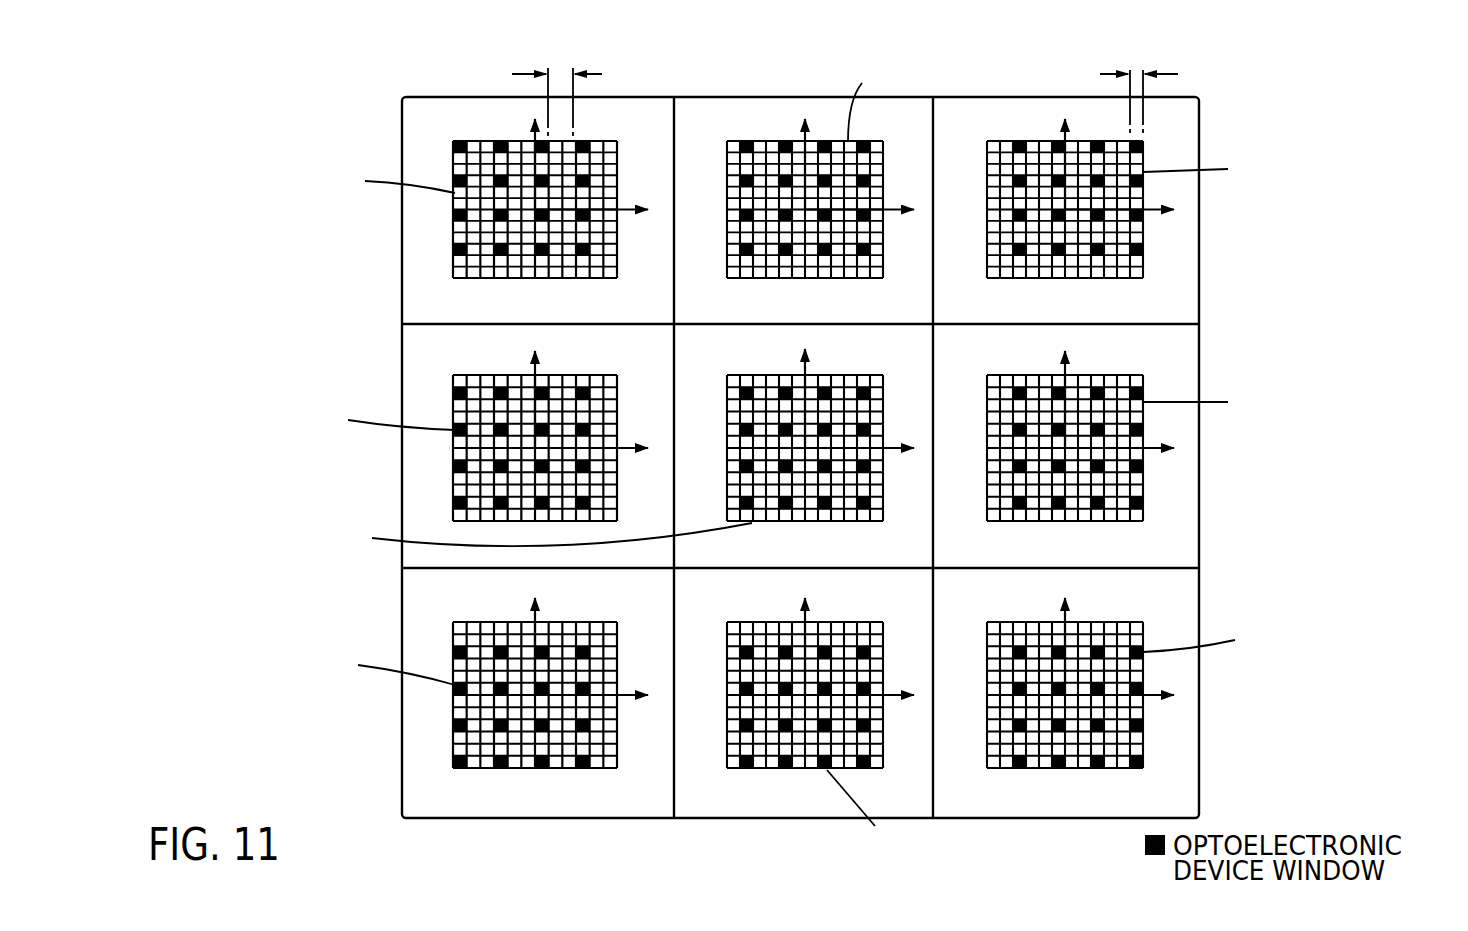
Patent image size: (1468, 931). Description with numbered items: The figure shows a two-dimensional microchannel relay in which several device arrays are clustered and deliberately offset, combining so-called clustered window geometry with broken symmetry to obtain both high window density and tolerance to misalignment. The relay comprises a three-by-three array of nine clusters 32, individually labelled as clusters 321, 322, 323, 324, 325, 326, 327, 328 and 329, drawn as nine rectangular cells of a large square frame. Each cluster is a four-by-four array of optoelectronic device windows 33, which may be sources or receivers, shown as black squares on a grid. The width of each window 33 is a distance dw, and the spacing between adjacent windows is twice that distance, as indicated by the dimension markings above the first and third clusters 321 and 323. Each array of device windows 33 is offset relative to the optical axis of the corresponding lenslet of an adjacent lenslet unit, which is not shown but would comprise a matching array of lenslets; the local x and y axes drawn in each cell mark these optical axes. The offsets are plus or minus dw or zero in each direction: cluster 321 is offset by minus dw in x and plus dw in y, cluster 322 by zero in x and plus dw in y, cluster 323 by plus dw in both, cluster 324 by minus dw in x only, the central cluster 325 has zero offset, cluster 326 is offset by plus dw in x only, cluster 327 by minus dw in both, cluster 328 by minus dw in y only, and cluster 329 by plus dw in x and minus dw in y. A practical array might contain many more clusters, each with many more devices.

The clusters 32 is at (800, 457).
The first cluster 321 is at (400, 168).
The second cluster 322 is at (704, 118).
The third cluster 323 is at (1188, 122).
The fourth cluster 324 is at (418, 365).
The fifth cluster 325 is at (733, 363).
The sixth cluster 326 is at (1185, 347).
The seventh cluster 327 is at (420, 600).
The eighth cluster 328 is at (753, 800).
The ninth cluster 329 is at (1183, 590).
The device window 33 is at (455, 253).